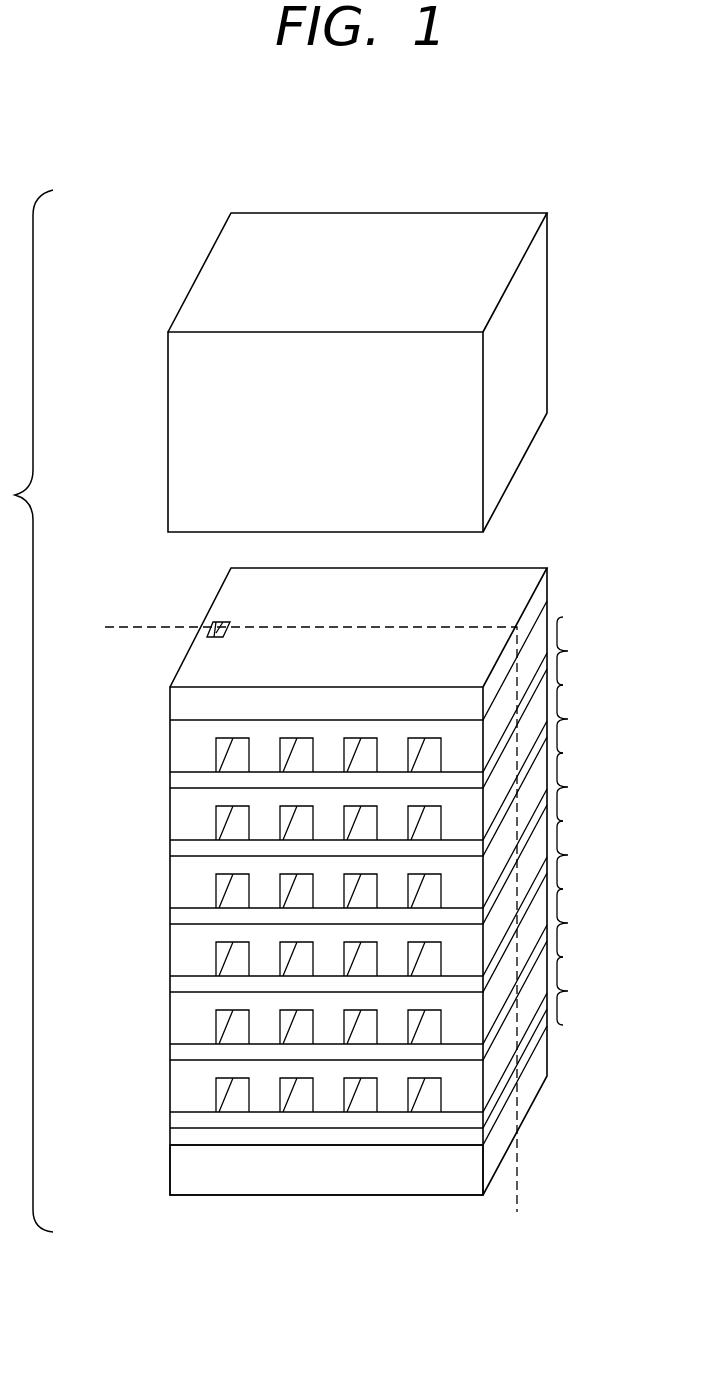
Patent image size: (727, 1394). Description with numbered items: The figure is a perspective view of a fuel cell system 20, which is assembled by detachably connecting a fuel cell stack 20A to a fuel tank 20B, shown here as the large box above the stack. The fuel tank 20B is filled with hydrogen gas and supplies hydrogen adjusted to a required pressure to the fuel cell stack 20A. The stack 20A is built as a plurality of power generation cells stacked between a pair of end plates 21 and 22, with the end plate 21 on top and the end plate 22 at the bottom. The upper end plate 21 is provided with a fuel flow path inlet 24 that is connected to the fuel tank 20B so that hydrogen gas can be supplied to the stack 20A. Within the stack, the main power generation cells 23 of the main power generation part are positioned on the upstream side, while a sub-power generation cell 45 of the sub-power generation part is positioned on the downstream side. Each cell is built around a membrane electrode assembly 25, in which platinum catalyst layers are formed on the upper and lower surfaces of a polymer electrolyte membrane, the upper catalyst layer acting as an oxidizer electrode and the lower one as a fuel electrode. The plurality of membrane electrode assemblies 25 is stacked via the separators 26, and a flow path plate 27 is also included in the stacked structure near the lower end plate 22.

The fuel cell system 20 is at (497, 165).
The fuel cell stack 20A is at (567, 597).
The fuel tank 20B is at (565, 280).
The end plate 21 is at (178, 705).
The end plate 22 is at (178, 1173).
The main power generation cell 23 is at (580, 787).
The fuel flow path inlet 24 is at (223, 620).
The membrane electrode assembly 25 is at (178, 778).
The separator 26 is at (178, 747).
The flow path plate 27 is at (178, 1135).
The sub-power generation cell 45 is at (580, 991).